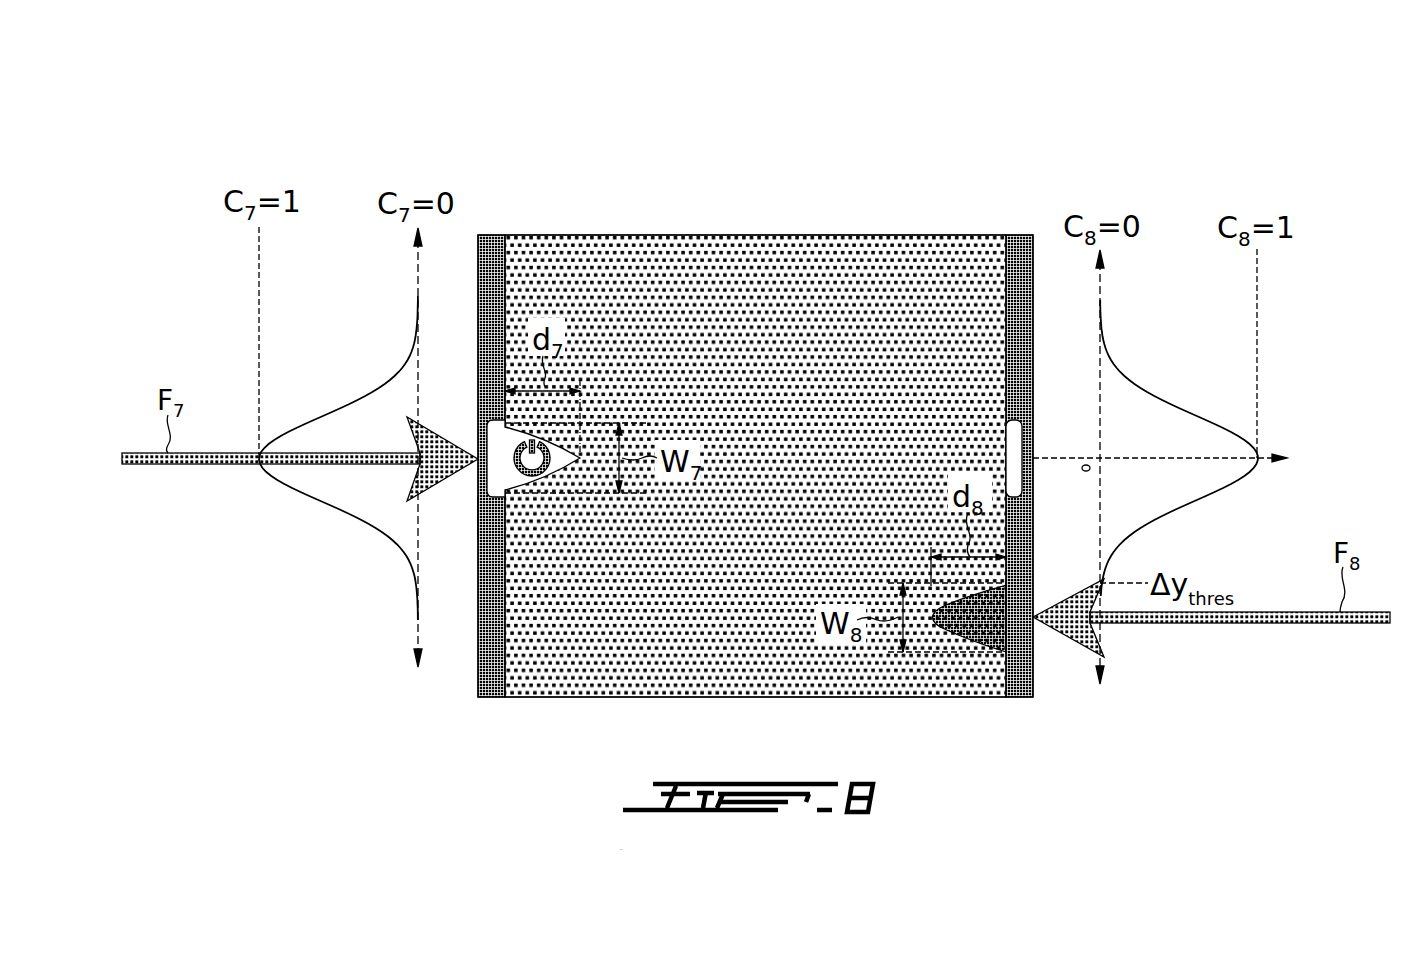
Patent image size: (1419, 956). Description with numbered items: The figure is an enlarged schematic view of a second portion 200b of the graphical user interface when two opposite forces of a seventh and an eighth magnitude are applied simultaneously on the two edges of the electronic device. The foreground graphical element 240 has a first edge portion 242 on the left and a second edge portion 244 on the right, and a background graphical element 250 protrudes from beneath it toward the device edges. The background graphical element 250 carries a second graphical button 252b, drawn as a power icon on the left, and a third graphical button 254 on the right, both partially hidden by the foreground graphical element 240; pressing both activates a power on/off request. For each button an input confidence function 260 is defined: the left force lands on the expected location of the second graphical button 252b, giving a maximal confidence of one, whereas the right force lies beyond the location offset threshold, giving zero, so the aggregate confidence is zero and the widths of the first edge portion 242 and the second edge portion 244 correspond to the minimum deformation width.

The second portion of the graphical user interface 200b is at (762, 394).
The foreground graphical element 240 is at (733, 247).
The background graphical element 250 is at (495, 235).
The first edge portion 242 is at (560, 447).
The second edge portion 244 is at (983, 640).
The second graphical button 252b is at (478, 492).
The third graphical button 254 is at (1018, 424).
The input confidence function 260 is at (324, 415).